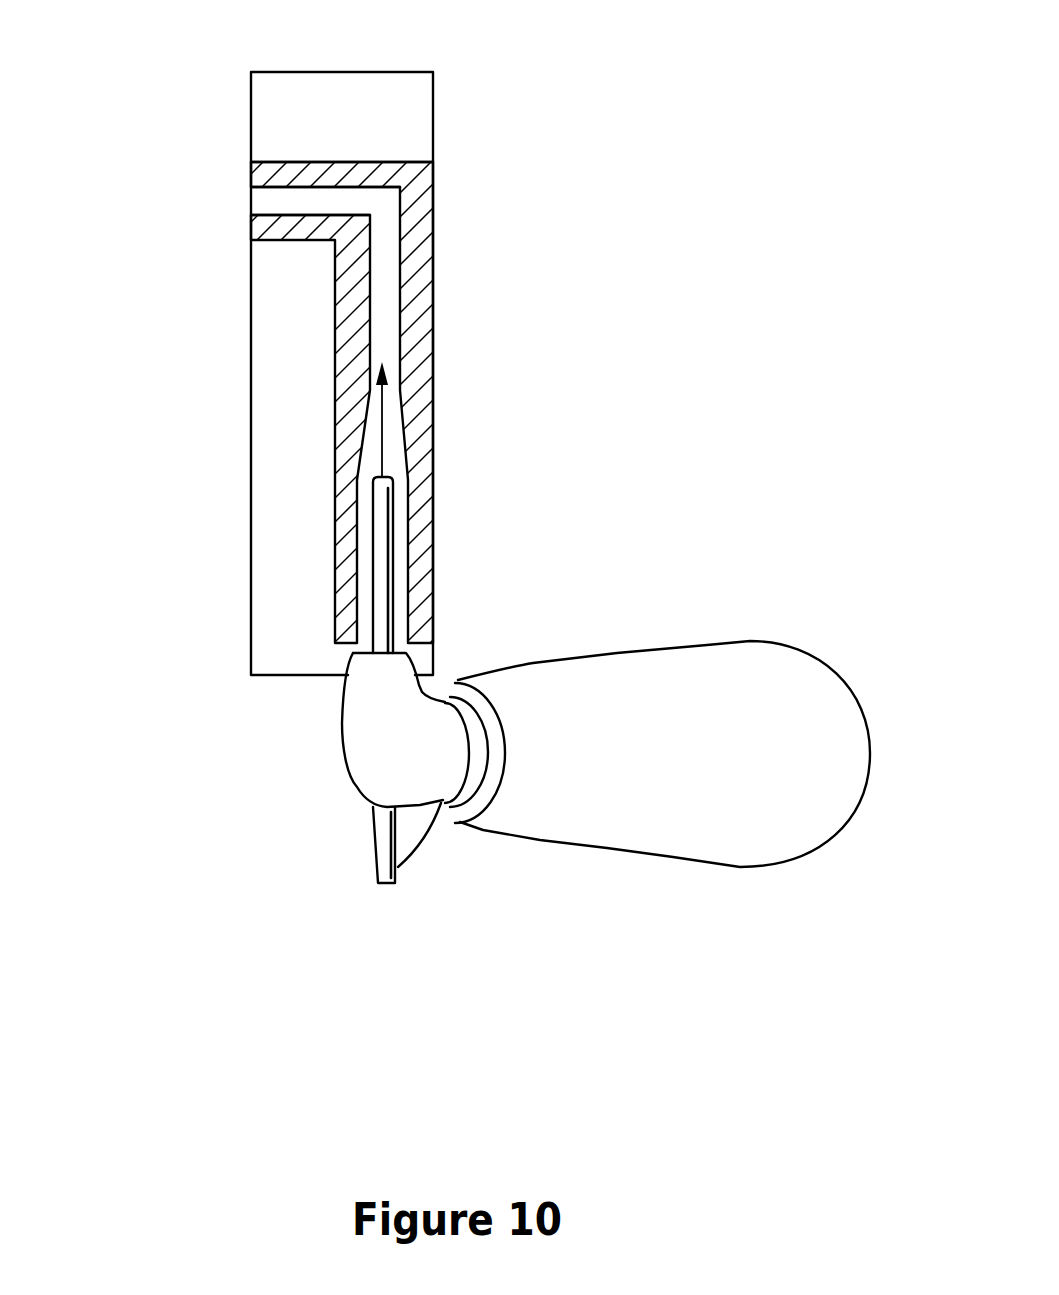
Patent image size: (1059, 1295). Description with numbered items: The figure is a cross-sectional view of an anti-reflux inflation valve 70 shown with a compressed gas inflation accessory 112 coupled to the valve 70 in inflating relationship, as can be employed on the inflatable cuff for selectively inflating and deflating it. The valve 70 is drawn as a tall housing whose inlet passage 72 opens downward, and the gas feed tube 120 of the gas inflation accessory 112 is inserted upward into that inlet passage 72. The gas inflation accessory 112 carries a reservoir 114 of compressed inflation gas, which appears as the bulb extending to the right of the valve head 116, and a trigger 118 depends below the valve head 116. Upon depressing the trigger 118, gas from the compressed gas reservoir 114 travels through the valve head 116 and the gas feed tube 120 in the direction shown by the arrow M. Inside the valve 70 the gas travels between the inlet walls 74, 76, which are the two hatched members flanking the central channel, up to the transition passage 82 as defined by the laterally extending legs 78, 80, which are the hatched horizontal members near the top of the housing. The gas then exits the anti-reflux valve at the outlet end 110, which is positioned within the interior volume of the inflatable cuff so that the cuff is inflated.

The anti-reflux inflation valve 70 is at (572, 70).
The inlet passage 72 is at (360, 582).
The inlet wall 74 is at (433, 282).
The inlet wall 76 is at (332, 415).
The laterally extending leg 78 is at (322, 215).
The laterally extending leg 80 is at (298, 162).
The transition passage 82 is at (265, 193).
The outlet end 110 is at (250, 203).
The compressed gas inflation accessory 112 is at (520, 915).
The reservoir 114 is at (690, 860).
The valve head 116 is at (342, 753).
The trigger 118 is at (372, 855).
The gas feed tube 120 is at (395, 551).
The arrow M is at (385, 424).